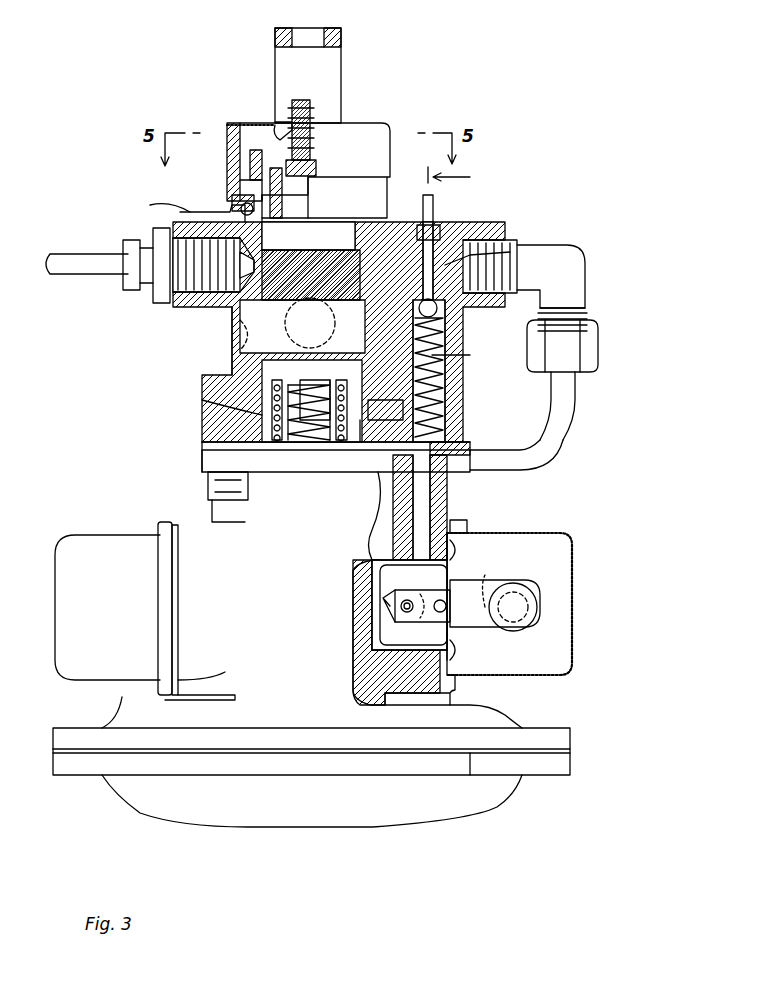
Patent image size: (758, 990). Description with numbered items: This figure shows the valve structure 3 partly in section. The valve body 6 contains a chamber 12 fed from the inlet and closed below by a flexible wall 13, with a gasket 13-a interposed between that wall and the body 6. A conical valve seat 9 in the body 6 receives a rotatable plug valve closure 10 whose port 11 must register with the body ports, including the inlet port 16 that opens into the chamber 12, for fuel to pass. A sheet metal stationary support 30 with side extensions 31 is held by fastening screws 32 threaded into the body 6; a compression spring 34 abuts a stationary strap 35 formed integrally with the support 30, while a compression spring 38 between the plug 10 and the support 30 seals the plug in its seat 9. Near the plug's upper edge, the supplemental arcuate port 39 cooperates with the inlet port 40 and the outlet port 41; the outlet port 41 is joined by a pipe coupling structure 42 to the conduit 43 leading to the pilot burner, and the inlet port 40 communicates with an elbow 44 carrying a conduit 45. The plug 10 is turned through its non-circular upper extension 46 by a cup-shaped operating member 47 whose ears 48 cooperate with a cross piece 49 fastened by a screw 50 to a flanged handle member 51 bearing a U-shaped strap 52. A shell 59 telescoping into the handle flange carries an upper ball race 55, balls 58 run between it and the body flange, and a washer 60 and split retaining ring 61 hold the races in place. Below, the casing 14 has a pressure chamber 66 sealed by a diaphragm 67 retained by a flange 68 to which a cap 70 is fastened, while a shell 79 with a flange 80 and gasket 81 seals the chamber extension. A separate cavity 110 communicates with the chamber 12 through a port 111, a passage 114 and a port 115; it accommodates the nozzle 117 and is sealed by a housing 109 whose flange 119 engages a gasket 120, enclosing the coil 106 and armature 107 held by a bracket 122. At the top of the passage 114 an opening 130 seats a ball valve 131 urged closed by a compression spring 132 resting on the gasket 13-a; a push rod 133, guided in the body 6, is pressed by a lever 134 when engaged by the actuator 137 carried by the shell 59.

The valve structure 3 is at (347, 848).
The valve body 6 is at (418, 235).
The conical valve seat 9 is at (350, 295).
The plug valve closure 10 is at (240, 356).
The port of plug valve closure 11 is at (250, 340).
The chamber 12 is at (202, 405).
The flexible wall or diaphragm 13 is at (455, 458).
The gasket 13-a is at (202, 446).
The casing 14 is at (205, 520).
The inlet port 16 is at (232, 324).
The stationary support 30 is at (338, 442).
The extension 31 is at (372, 420).
The fastening screw 32 is at (366, 445).
The compression spring 34 is at (292, 440).
The stationary strap 35 is at (318, 378).
The compression spring 38 is at (270, 412).
The supplemental arcuate port 39 is at (432, 176).
The inlet port 40 is at (438, 222).
The outlet port 41 is at (210, 255).
The pipe coupling structure 42 is at (155, 300).
The conduit 43 is at (100, 275).
The elbow 44 is at (587, 275).
The conduit 45 is at (560, 452).
The upper extension of plug 46 is at (300, 195).
The operating member 47 is at (252, 178).
The ears 48 is at (316, 163).
The cross piece 49 is at (272, 125).
The screw 50 is at (302, 110).
The handle member 51 is at (355, 125).
The U-shaped strap 52 is at (345, 55).
The upper ball race 55 is at (232, 200).
The balls 58 is at (262, 214).
The shell 59 is at (227, 150).
The washer 60 is at (242, 205).
The split retaining ring 61 is at (240, 183).
The pressure chamber 66 is at (372, 520).
The flexible diaphragm 67 is at (470, 775).
The flange 68 is at (565, 732).
The cap 70 is at (497, 807).
The shell or casing 79 is at (58, 608).
The flange 80 is at (158, 530).
The gasket 81 is at (180, 628).
The coil 106 is at (545, 590).
The armature 107 is at (520, 610).
The shell or housing 109 is at (575, 643).
The cavity 110 is at (414, 603).
The port 111 is at (440, 495).
The passage 114 is at (455, 385).
The port 115 is at (450, 408).
The nozzle 117 is at (395, 622).
The flange 119 is at (468, 527).
The gasket 120 is at (452, 538).
The bracket 122 is at (455, 640).
The opening 130 is at (515, 248).
The ball valve 131 is at (445, 312).
The compression spring 132 is at (460, 425).
The push rod 133 is at (495, 225).
The lever 134 is at (440, 205).
The actuator 137 is at (150, 205).